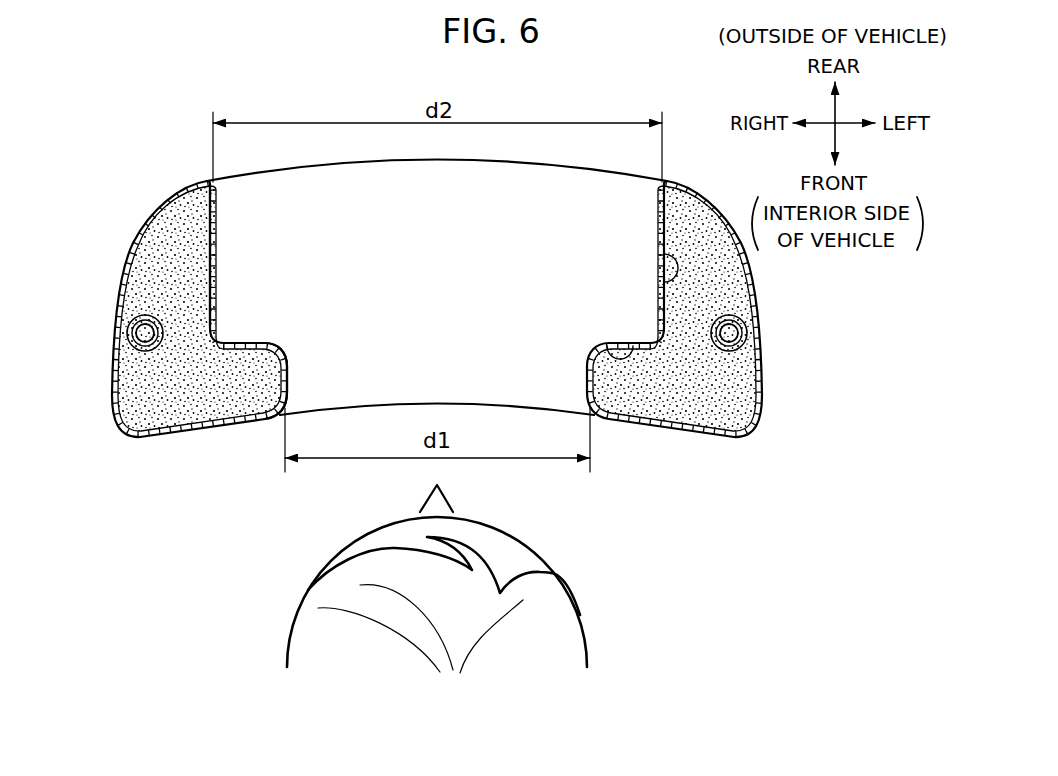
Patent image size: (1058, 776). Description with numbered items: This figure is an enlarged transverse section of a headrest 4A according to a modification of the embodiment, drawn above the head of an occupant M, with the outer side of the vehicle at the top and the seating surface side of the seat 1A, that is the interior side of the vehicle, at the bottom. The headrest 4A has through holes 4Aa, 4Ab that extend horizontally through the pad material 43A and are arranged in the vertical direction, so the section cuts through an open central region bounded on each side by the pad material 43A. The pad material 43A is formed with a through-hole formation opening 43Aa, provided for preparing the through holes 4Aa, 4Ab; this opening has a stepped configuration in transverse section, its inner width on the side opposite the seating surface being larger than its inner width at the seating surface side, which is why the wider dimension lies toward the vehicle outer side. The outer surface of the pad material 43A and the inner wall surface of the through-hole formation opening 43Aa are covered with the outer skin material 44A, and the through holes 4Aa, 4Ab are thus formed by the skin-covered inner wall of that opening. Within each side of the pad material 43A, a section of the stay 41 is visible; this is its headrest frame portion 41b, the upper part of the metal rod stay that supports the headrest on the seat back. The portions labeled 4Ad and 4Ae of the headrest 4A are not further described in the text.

The seat 1A is at (185, 157).
The headrest 4A is at (155, 194).
The inner side wall of pad 4Ae is at (216, 193).
The lower protruding portion of pad 4Ad is at (287, 386).
The through hole 4Ab is at (437, 288).
The through hole 4Aa is at (483, 295).
The pad material 43A is at (724, 309).
The through-hole formation opening 43Aa is at (609, 352).
The outer skin material 44A is at (762, 375).
The stay 41 is at (797, 337).
The headrest frame portion 41b is at (744, 335).
The occupant M is at (588, 611).